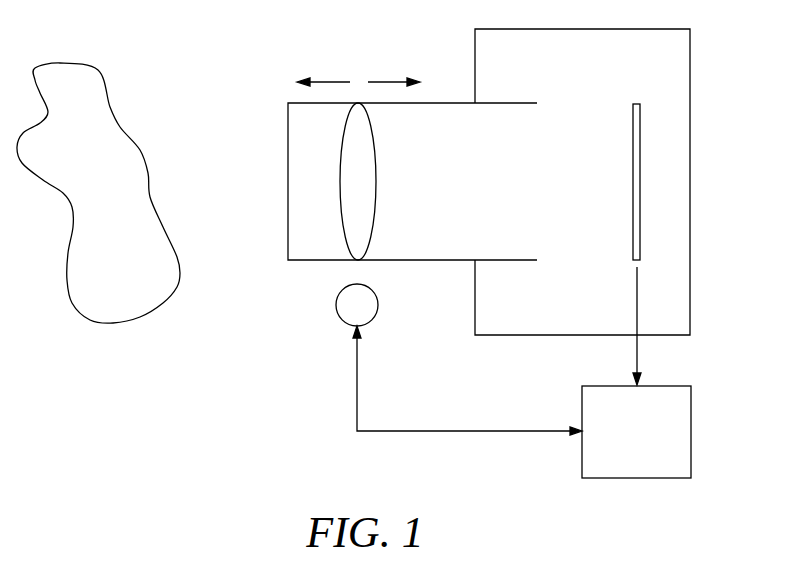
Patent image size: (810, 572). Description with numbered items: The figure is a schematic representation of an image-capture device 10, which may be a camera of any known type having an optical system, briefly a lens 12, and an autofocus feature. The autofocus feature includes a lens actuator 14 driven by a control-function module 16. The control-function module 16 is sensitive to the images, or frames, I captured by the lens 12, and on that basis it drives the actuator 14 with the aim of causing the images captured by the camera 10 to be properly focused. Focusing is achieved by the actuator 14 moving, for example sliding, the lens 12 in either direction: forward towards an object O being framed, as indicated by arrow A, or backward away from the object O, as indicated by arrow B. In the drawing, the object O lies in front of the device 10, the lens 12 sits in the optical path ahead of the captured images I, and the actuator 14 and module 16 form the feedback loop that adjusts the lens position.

The object O is at (90, 120).
The arrow A is at (330, 80).
The arrow B is at (385, 80).
The image-capture device 10 is at (713, 228).
The optical system 12 is at (362, 171).
The images I is at (633, 168).
The lens actuator 14 is at (355, 303).
The control-function module 16 is at (673, 387).